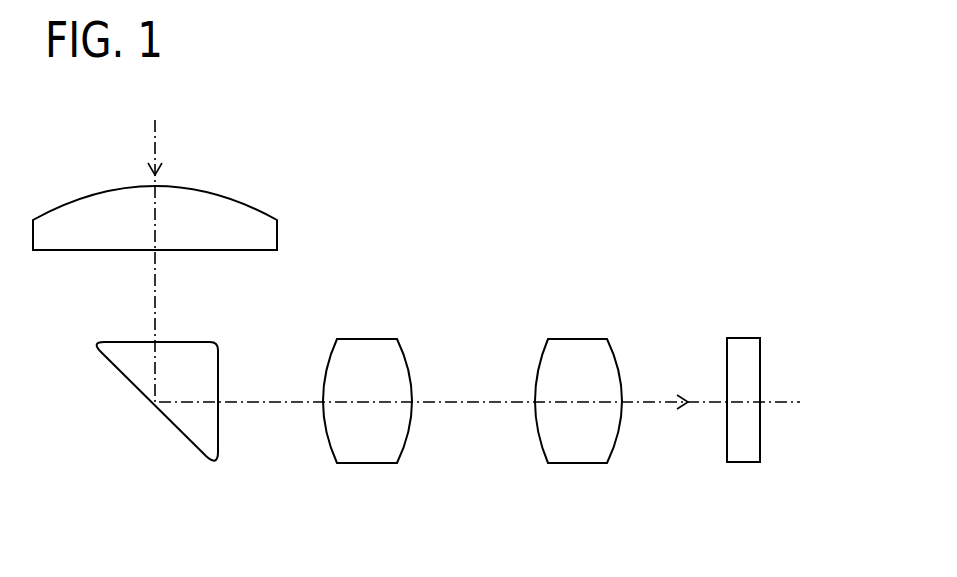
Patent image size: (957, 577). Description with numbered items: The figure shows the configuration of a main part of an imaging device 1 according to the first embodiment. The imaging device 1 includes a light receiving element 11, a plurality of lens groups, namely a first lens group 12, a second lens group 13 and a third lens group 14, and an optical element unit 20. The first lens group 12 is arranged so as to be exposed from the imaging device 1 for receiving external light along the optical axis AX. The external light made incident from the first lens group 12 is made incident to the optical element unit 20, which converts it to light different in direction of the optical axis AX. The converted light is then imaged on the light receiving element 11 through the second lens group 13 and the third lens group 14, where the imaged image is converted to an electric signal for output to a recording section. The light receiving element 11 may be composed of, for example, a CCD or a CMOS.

The imaging device 1 is at (607, 186).
The light receiving element 11 is at (745, 462).
The first lens group 12 is at (277, 234).
The second lens group 13 is at (365, 463).
The third lens group 14 is at (577, 463).
The optical element unit 20 is at (150, 428).
The optical axis AX is at (469, 248).